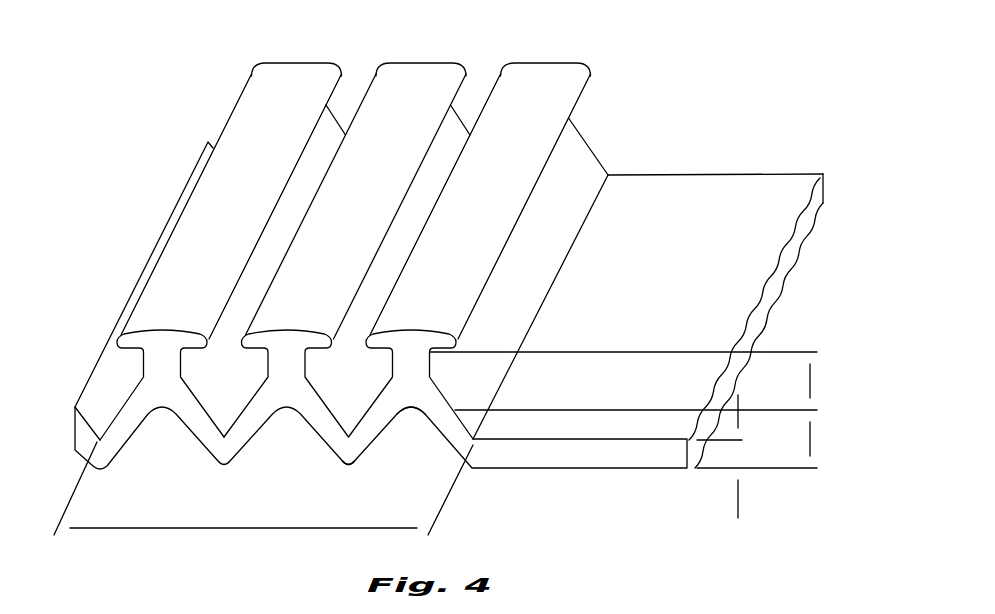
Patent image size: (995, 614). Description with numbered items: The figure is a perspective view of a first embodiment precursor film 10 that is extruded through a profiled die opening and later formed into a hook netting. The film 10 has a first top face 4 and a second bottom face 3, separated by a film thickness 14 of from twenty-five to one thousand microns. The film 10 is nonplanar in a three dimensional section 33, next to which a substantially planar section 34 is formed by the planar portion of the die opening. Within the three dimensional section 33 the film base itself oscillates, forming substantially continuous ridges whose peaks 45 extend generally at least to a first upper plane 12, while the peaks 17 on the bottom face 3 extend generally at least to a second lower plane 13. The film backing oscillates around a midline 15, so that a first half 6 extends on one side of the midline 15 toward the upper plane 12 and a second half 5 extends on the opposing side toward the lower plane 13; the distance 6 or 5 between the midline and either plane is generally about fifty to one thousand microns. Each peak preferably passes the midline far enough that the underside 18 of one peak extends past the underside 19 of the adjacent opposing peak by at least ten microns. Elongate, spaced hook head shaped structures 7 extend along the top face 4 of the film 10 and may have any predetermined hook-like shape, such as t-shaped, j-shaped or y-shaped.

The second bottom face 3 is at (452, 450).
The first top face 4 is at (756, 183).
The second half 5 is at (812, 437).
The first half 6 is at (812, 379).
The hook head shaped structure 7 is at (122, 340).
The film 10 is at (666, 49).
The first upper plane 12 is at (590, 351).
The second lower plane 13 is at (767, 467).
The film thickness 14 is at (737, 503).
The midline 15 is at (590, 409).
The peak 17 is at (345, 470).
The underside of the peak 18 is at (411, 410).
The underside of the adjacent opposing peak 19 is at (337, 428).
The three dimensional section 33 is at (240, 528).
The substantially planar section 34 is at (677, 183).
The peak 45 is at (570, 73).